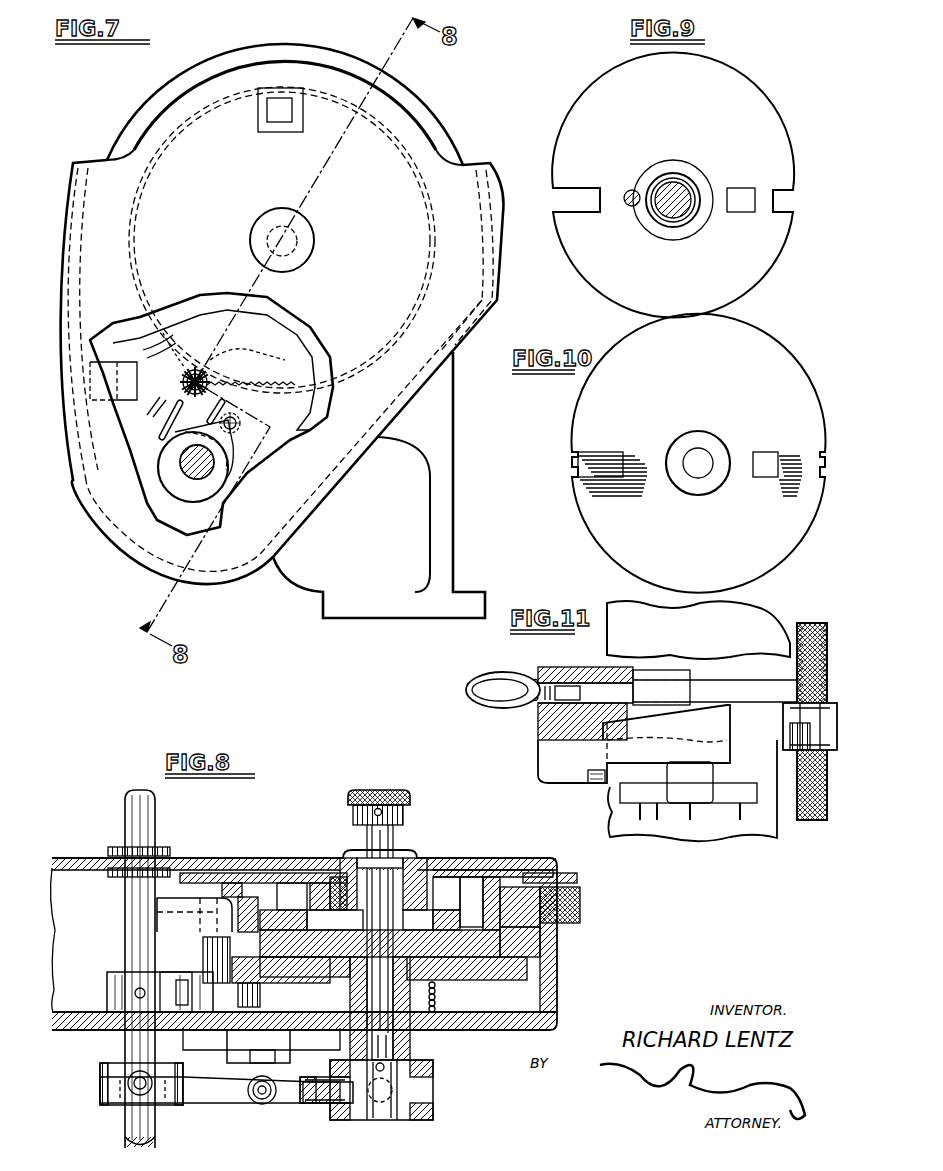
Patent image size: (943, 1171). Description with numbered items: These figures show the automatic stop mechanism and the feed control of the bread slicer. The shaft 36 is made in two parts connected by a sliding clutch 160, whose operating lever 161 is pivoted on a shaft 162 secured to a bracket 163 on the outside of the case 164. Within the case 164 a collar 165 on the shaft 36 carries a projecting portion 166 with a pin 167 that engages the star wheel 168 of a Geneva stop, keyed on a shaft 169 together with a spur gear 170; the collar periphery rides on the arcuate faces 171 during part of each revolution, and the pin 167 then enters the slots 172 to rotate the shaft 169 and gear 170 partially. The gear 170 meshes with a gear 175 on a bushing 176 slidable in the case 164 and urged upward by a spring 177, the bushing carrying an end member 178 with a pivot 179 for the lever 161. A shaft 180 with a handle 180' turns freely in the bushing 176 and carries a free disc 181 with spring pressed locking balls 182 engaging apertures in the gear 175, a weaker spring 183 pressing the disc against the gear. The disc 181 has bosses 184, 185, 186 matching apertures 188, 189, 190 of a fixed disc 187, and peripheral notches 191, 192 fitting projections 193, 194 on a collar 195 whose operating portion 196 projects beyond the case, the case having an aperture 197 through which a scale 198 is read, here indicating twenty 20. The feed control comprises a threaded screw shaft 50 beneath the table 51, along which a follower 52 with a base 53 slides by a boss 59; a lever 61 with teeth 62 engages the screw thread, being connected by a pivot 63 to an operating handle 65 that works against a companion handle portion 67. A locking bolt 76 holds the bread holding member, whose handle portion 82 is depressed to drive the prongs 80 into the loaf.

In FIG. 7, the dial reading 20 is at (279, 110).
In FIG. 7, the shaft 36 is at (190, 465).
In FIG. 8, the shaft 36 is at (126, 800).
In FIG. 11, the screw shaft 50 is at (820, 623).
In FIG. 11, the support or table 51 is at (770, 603).
In FIG. 11, the follower 52 is at (655, 805).
In FIG. 11, the base 53 is at (538, 753).
In FIG. 11, the boss 59 is at (790, 733).
In FIG. 11, the lever 61 is at (762, 690).
In FIG. 11, the teeth 62 is at (797, 690).
In FIG. 11, the pivot 63 is at (585, 668).
In FIG. 11, the operating handle 65 is at (490, 700).
In FIG. 11, the companion handle portion 67 is at (478, 680).
In FIG. 11, the locking bolt 76 is at (592, 784).
In FIG. 11, the bread engaging prongs 80 is at (637, 812).
In FIG. 11, the handle portion 82 is at (679, 805).
In FIG. 8, the sliding clutch 160 is at (104, 1100).
In FIG. 8, the operating lever 161 is at (220, 1095).
In FIG. 8, the shaft 162 is at (260, 1098).
In FIG. 8, the bracket 163 is at (232, 1045).
In FIG. 7, the case 164 is at (476, 345).
In FIG. 8, the case 164 is at (460, 1025).
In FIG. 7, the collar 165 is at (190, 494).
In FIG. 8, the collar 165 is at (115, 990).
In FIG. 7, the projecting portion 166 is at (232, 440).
In FIG. 8, the projecting portion 166 is at (165, 965).
In FIG. 7, the pin 167 is at (238, 420).
In FIG. 8, the pin 167 is at (190, 975).
In FIG. 7, the star wheel 168 is at (154, 420).
In FIG. 8, the star wheel 168 is at (262, 1000).
In FIG. 7, the shaft 169 is at (90, 367).
In FIG. 8, the shaft 169 is at (157, 912).
In FIG. 7, the spur gear 170 is at (215, 377).
In FIG. 8, the spur gear 170 is at (205, 945).
In FIG. 7, the arcuate faces 171 is at (142, 407).
In FIG. 7, the slots 172 is at (170, 436).
In FIG. 7, the gear 175 is at (155, 342).
In FIG. 8, the gear 175 is at (540, 985).
In FIG. 8, the bushing 176 is at (412, 1050).
In FIG. 8, the spring 177 is at (437, 1001).
In FIG. 8, the end member 178 is at (434, 1110).
In FIG. 8, the pivot 179 is at (383, 1104).
In FIG. 7, the shaft 180 is at (307, 236).
In FIG. 9, the shaft 180 is at (695, 189).
In FIG. 8, the shaft 180 is at (411, 948).
In FIG. 7, the handle 180' is at (257, 240).
In FIG. 8, the handle 180' is at (381, 796).
In FIG. 10, the free disc 181 is at (598, 397).
In FIG. 8, the free disc 181 is at (515, 940).
In FIG. 8, the spring pressed locking balls 182 is at (490, 960).
In FIG. 9, the spring 183 is at (684, 218).
In FIG. 8, the spring 183 is at (364, 921).
In FIG. 10, the boss 184 is at (590, 455).
In FIG. 8, the boss 184 is at (292, 905).
In FIG. 10, the boss 185 is at (765, 465).
In FIG. 8, the boss 185 is at (442, 920).
In FIG. 10, the boss 186 is at (812, 472).
In FIG. 8, the boss 186 is at (570, 930).
In FIG. 9, the disc 187 is at (748, 108).
In FIG. 8, the disc 187 is at (320, 882).
In FIG. 9, the aperture 188 is at (568, 198).
In FIG. 8, the aperture 188 is at (283, 872).
In FIG. 9, the aperture 189 is at (745, 205).
In FIG. 8, the aperture 189 is at (440, 867).
In FIG. 9, the aperture 190 is at (795, 197).
In FIG. 8, the aperture 190 is at (480, 870).
In FIG. 10, the peripheral notch 191 is at (573, 463).
In FIG. 8, the peripheral notch 191 is at (262, 960).
In FIG. 10, the peripheral notch 192 is at (826, 462).
In FIG. 8, the projection 193 is at (262, 930).
In FIG. 8, the projection 194 is at (481, 903).
In FIG. 8, the collar 195 is at (578, 876).
In FIG. 8, the operating portion 196 is at (560, 864).
In FIG. 7, the aperture 197 is at (268, 123).
In FIG. 8, the aperture 197 is at (490, 880).
In FIG. 7, the scale 198 is at (280, 117).
In FIG. 8, the scale 198 is at (520, 877).